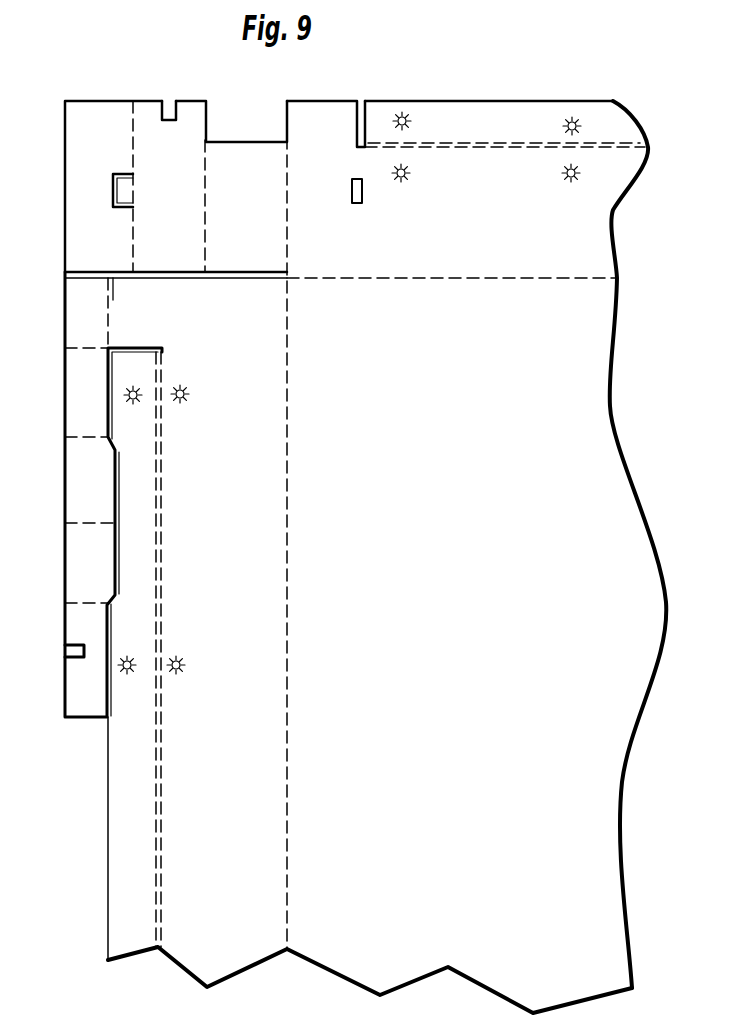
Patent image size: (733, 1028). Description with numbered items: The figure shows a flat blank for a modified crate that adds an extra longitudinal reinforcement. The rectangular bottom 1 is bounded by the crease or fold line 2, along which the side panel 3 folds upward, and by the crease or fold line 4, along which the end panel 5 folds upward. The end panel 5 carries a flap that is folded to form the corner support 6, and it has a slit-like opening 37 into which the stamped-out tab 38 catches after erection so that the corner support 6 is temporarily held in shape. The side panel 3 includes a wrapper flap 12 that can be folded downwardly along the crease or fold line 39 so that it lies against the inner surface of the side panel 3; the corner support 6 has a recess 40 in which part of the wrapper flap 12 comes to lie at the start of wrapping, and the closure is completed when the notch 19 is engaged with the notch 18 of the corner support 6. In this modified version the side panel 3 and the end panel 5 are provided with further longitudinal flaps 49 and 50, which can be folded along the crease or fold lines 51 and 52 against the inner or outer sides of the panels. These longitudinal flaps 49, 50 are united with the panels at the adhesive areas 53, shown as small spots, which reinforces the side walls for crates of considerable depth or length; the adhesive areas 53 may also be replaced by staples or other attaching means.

The bottom 1 is at (339, 950).
The crease or fold line 2 is at (283, 895).
The side panel 3 is at (183, 797).
The crease or fold line 4 is at (590, 277).
The end panel 5 is at (490, 163).
The corner support 6 is at (158, 150).
The wrapper flap 12 is at (63, 487).
The notch 18 is at (170, 105).
The notch 19 is at (71, 646).
The slit-like opening 37 is at (354, 192).
The stamped-out tab 38 is at (122, 185).
The crease or fold line 39 is at (108, 315).
The recess 40 is at (249, 142).
The longitudinal flap 49 is at (123, 845).
The longitudinal flap 50 is at (543, 122).
The crease or fold line 51 is at (157, 897).
The crease or fold line 52 is at (613, 145).
The adhesive areas 53 is at (404, 168).